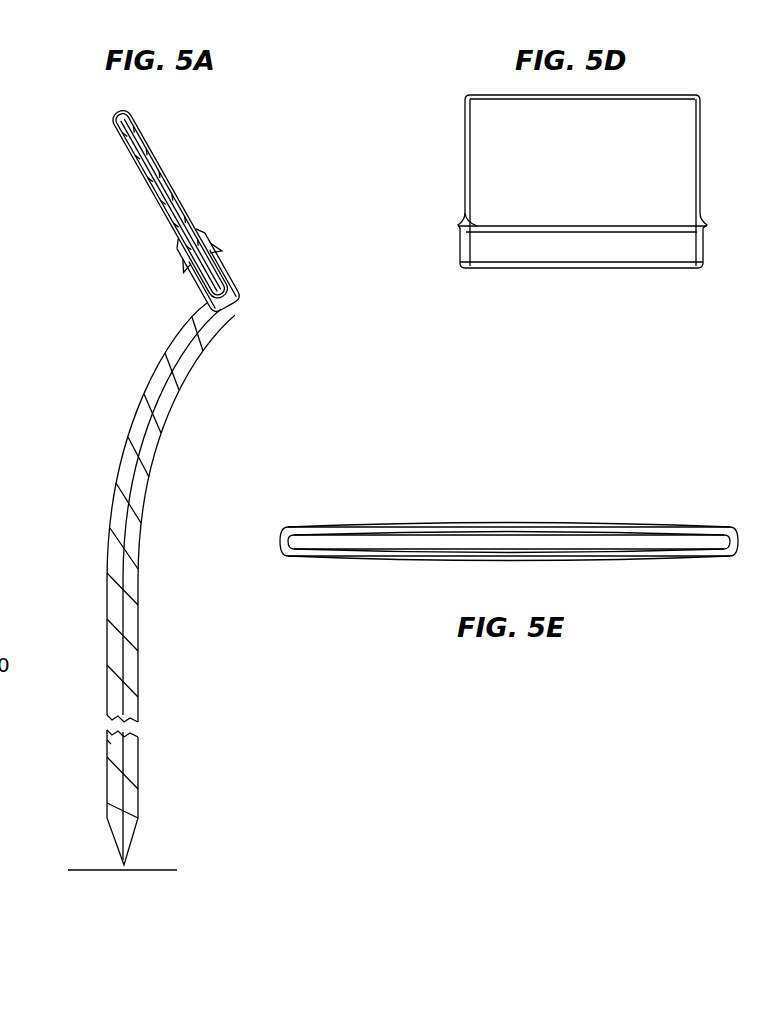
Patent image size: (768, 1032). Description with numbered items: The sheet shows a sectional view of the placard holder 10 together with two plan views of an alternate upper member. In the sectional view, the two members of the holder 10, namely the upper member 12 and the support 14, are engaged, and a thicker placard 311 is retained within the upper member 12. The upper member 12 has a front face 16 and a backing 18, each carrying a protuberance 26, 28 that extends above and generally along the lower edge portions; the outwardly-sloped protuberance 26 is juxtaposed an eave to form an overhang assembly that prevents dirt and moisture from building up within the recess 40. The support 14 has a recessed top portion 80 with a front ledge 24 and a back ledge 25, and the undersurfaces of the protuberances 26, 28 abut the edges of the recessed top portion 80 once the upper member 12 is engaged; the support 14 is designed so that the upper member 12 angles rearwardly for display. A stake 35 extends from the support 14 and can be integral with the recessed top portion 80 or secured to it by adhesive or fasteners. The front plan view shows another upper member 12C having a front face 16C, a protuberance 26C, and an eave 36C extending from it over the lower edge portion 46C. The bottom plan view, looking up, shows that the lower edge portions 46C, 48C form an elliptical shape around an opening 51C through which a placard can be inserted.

In FIG. 5A, the placard holder 10 is at (82, 131).
In FIG. 5A, the upper member 12 is at (114, 213).
In FIG. 5A, the support 14 is at (122, 350).
In FIG. 5A, the front face 16 is at (160, 163).
In FIG. 5A, the backing 18 is at (138, 172).
In FIG. 5A, the front ledge 24 is at (240, 291).
In FIG. 5A, the back ledge 25 is at (205, 290).
In FIG. 5A, the protuberance 26 is at (216, 245).
In FIG. 5A, the protuberance 28 is at (188, 258).
In FIG. 5A, the stake 35 is at (107, 572).
In FIG. 5A, the recess 40 is at (234, 268).
In FIG. 5A, the recessed top portion 80 is at (254, 296).
In FIG. 5A, the thicker placard 311 is at (140, 126).
In FIG. 5D, the upper member 12C is at (448, 152).
In FIG. 5D, the front face 16C is at (640, 156).
In FIG. 5D, the protuberance 26C is at (477, 224).
In FIG. 5D, the eave 36C is at (649, 232).
In FIG. 5D, the lower edge portion 46C is at (525, 250).
In FIG. 5E, the lower edge portion 46C is at (457, 521).
In FIG. 5E, the lower edge portion 48C is at (373, 560).
In FIG. 5E, the opening 51C is at (558, 551).